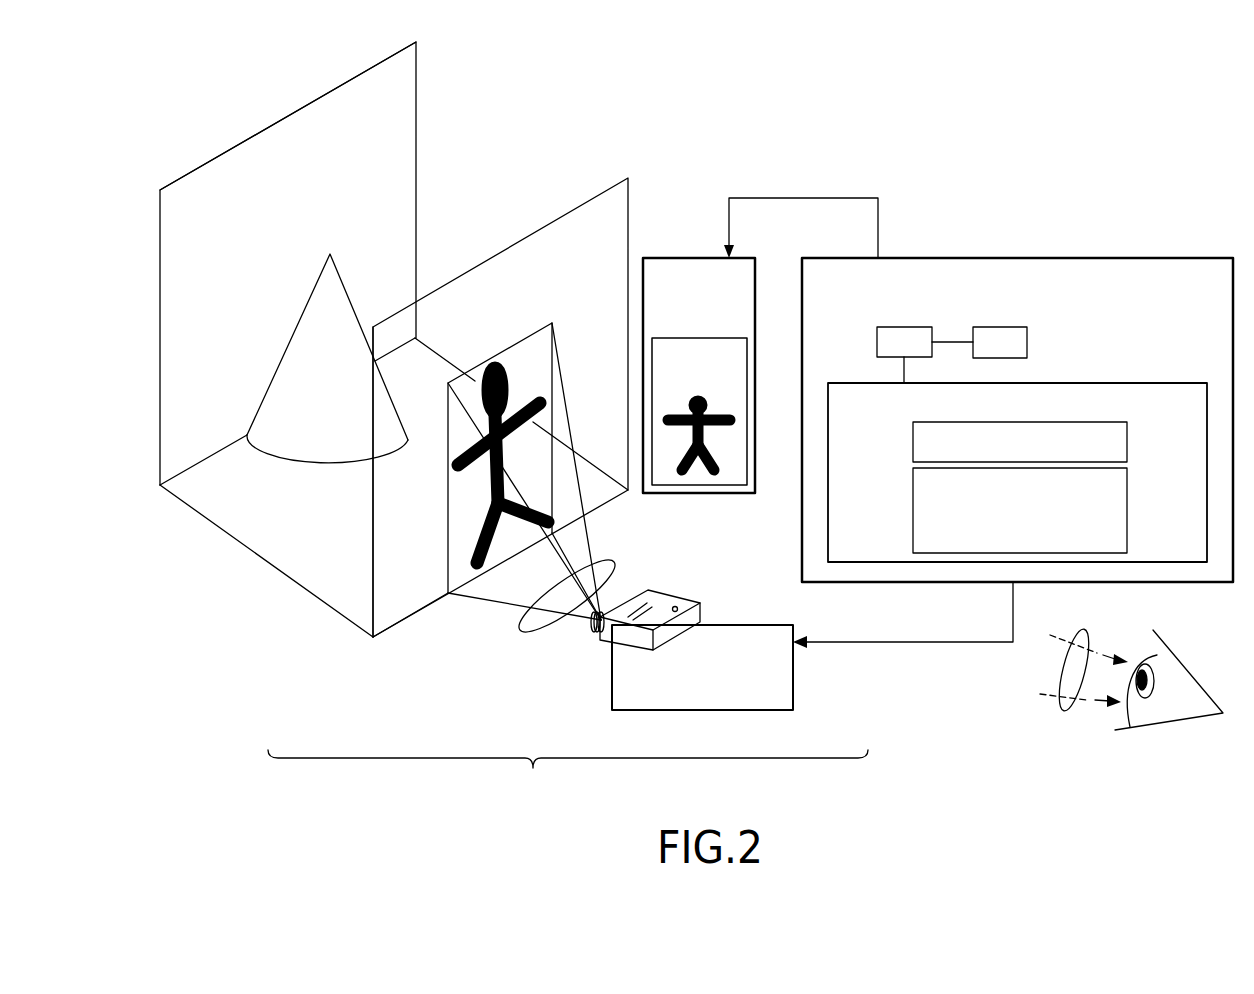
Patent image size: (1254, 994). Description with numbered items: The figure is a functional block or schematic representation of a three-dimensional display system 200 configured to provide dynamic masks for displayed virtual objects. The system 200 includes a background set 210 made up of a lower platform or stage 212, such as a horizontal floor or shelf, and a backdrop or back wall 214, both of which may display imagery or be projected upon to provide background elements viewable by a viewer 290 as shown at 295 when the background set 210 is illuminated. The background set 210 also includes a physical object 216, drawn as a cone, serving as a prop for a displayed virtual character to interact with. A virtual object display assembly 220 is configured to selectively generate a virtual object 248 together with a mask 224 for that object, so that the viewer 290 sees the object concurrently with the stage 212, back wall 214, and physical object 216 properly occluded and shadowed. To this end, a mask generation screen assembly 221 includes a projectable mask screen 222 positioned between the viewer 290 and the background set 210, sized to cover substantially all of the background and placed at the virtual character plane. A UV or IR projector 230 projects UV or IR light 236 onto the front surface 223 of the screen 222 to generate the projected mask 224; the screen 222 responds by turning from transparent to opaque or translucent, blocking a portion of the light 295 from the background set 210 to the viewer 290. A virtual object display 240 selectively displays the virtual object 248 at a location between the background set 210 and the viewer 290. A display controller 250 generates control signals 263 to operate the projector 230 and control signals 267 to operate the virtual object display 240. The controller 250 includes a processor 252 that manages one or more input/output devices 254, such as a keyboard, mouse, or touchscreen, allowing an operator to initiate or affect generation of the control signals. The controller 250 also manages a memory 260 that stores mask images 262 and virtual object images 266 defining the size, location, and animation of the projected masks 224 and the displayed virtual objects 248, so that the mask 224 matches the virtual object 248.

The 3D display system 200 is at (212, 135).
The background set 210 is at (180, 552).
The stage 212 is at (261, 559).
The back wall 214 is at (160, 329).
The physical object 216 is at (284, 466).
The virtual object display assembly 220 is at (568, 786).
The mask generation screen assembly 221 is at (495, 640).
The projectable mask screen 222 is at (373, 547).
The front surface 223 is at (387, 610).
The projected mask 224 is at (448, 520).
The UV or IR projector 230 is at (680, 594).
The UV or IR light 236 is at (615, 572).
The virtual object display 240 is at (672, 258).
The virtual object 248 is at (755, 442).
The display controller 250 is at (1095, 258).
The processor 252 is at (877, 345).
The input/output device 254 is at (1027, 343).
The memory 260 is at (1150, 383).
The mask images 262 is at (1127, 442).
The control signals 263 is at (880, 645).
The virtual object images 266 is at (1127, 488).
The control signals 267 is at (879, 215).
The viewer 290 is at (1200, 680).
The light to viewer 295 is at (1068, 712).